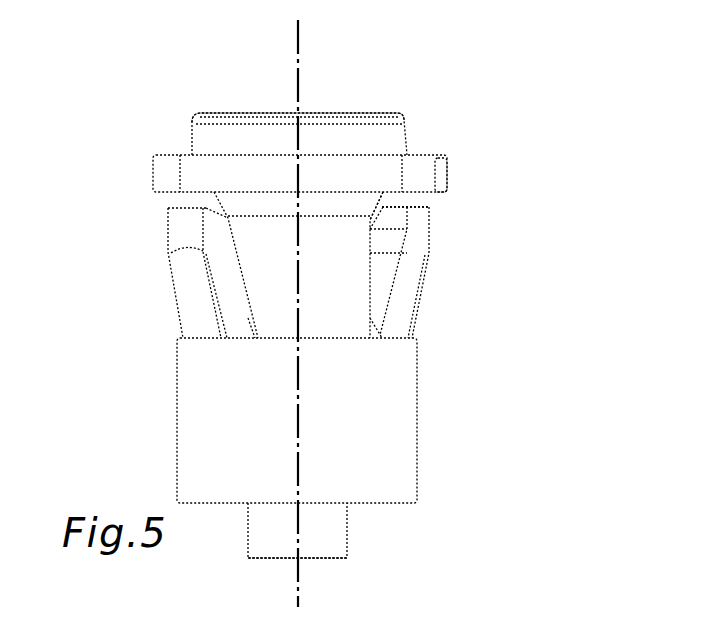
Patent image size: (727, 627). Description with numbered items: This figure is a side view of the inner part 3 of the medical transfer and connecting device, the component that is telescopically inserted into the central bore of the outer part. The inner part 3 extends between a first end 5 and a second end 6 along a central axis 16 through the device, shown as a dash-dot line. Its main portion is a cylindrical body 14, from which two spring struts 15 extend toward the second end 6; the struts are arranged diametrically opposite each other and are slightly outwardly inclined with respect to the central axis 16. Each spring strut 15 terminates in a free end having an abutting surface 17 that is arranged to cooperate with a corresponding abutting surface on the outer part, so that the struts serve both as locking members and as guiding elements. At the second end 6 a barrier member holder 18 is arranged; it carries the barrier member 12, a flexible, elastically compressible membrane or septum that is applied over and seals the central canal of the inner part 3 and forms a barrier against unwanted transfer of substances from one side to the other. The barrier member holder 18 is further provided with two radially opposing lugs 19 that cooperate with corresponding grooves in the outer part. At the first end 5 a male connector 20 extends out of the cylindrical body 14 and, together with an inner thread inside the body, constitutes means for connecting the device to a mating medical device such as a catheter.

The inner part 3 is at (550, 97).
The first end 5 is at (322, 555).
The second end 6 is at (372, 114).
The barrier member 12 is at (228, 114).
The cylindrical body 14 is at (380, 413).
The spring struts 15 is at (413, 257).
The central axis 16 is at (297, 42).
The abutting surface 17 is at (407, 205).
The barrier member holder 18 is at (338, 177).
The lugs 19 is at (168, 170).
The male connector 20 is at (323, 525).